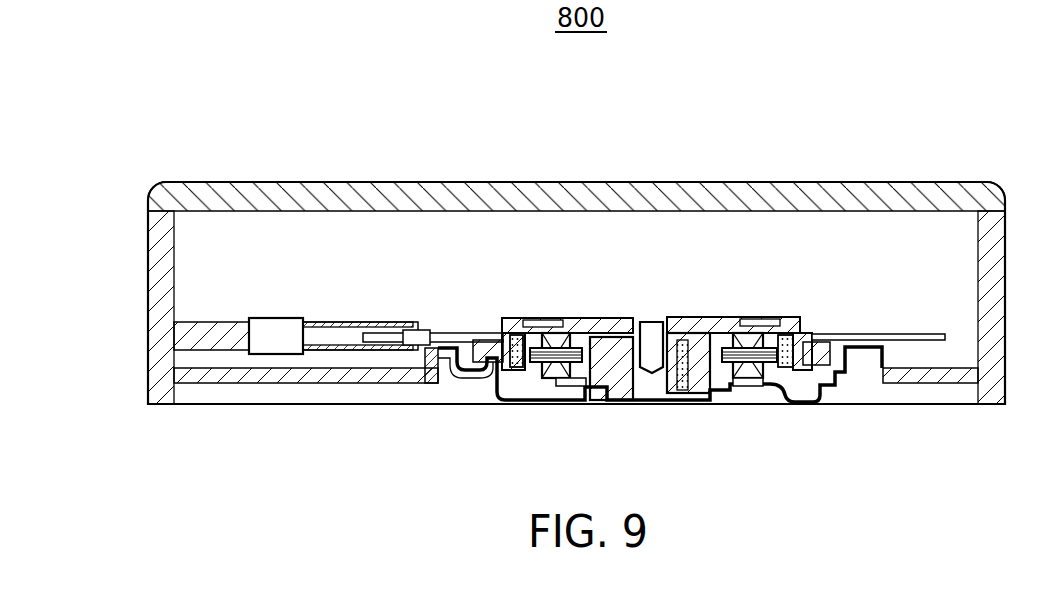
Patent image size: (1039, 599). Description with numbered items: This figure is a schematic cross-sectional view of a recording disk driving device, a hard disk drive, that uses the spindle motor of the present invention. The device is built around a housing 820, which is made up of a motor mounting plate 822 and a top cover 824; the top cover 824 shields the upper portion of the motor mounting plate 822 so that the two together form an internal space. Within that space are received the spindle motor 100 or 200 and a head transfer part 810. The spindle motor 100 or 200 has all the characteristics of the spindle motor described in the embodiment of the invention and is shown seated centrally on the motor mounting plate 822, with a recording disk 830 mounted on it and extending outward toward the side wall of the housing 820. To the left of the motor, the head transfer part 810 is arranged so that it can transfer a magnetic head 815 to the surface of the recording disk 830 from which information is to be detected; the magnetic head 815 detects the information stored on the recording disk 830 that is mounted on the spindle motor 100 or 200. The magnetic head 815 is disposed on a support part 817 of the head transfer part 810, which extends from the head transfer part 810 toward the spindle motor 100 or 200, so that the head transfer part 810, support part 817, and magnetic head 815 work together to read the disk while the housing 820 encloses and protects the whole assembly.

The housing 820 is at (141, 238).
The top cover 824 is at (333, 200).
The motor mounting plate 822 is at (991, 378).
The head transfer part 810 is at (266, 356).
The support part 817 is at (330, 357).
The magnetic head 815 is at (425, 352).
The spindle motor 100 is at (649, 288).
The spindle motor 200 is at (657, 359).
The recording disk 830 is at (878, 334).